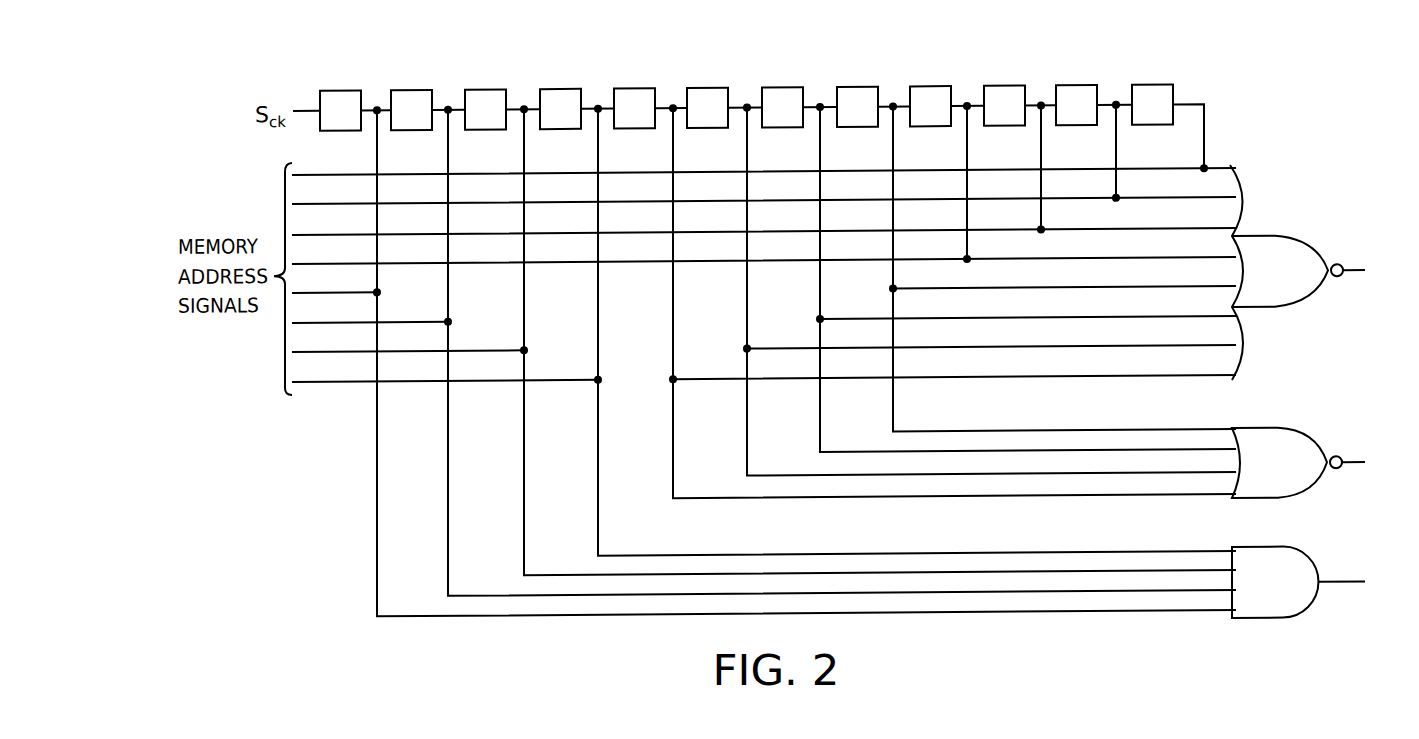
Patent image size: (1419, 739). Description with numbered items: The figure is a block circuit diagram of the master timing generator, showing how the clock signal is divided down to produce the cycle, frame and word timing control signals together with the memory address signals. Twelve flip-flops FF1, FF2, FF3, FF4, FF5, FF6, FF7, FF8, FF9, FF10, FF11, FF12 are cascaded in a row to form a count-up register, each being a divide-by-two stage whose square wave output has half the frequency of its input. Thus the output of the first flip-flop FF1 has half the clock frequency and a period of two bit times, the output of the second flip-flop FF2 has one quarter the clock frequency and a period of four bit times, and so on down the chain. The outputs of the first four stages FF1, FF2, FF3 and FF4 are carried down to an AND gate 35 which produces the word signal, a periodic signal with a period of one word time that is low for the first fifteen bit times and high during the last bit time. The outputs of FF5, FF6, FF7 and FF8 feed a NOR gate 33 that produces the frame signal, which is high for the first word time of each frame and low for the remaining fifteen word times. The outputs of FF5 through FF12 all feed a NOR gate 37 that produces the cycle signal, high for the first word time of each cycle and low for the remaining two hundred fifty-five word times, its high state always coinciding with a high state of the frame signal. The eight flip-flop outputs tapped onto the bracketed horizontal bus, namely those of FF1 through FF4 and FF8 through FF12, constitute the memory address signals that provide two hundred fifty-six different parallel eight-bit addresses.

The NOR gate 33 is at (1300, 435).
The AND gate 35 is at (1305, 555).
The NOR gate 37 is at (1295, 245).
The flip-flop FF1 is at (337, 91).
The flip-flop FF2 is at (408, 91).
The flip-flop FF3 is at (482, 91).
The flip-flop FF4 is at (557, 91).
The flip-flop FF5 is at (631, 91).
The flip-flop FF6 is at (704, 91).
The flip-flop FF7 is at (779, 91).
The flip-flop FF8 is at (854, 91).
The flip-flop FF9 is at (927, 91).
The flip-flop FF10 is at (1001, 91).
The flip-flop FF11 is at (1073, 91).
The flip-flop FF12 is at (1149, 91).